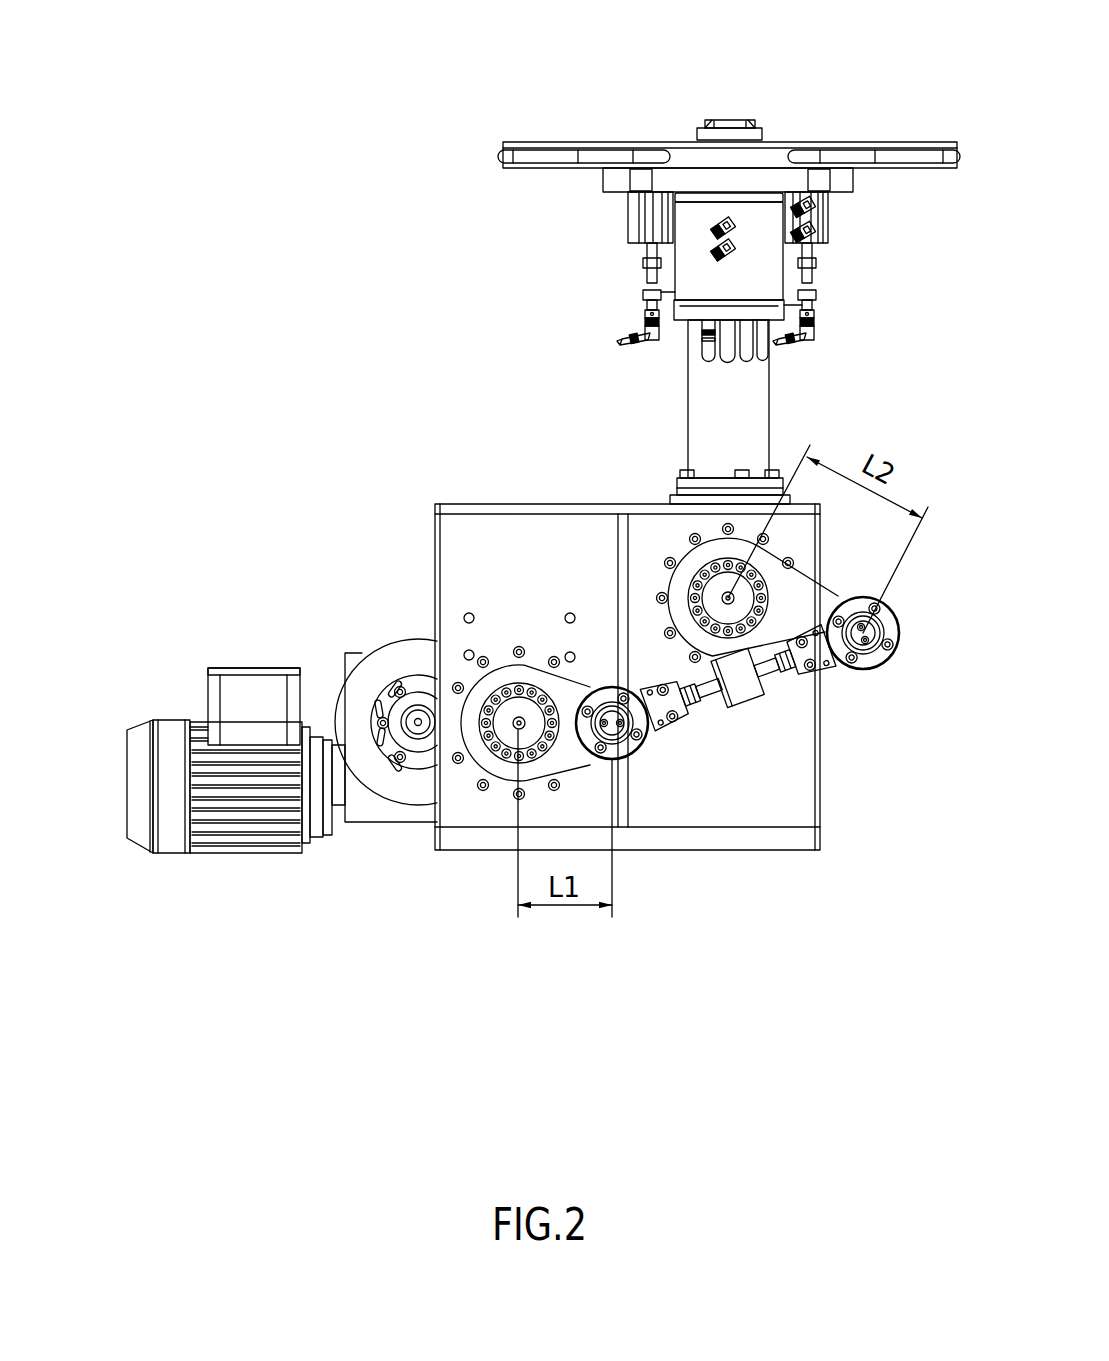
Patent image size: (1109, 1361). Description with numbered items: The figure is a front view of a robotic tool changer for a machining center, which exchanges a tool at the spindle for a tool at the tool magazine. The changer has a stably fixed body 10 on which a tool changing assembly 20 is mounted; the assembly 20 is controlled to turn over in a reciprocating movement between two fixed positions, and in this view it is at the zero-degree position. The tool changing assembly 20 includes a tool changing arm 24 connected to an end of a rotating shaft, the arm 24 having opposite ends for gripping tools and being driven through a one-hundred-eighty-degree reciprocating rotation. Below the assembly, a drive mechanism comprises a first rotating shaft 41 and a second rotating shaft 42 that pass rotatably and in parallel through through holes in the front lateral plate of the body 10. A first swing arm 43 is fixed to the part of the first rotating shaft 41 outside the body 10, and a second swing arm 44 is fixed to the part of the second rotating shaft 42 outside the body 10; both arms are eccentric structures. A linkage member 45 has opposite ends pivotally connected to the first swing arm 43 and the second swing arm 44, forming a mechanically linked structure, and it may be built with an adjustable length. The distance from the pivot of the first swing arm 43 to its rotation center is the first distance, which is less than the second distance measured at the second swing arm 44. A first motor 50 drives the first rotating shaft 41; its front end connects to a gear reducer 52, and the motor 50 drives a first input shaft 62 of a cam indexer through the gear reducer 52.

The body 10 is at (452, 492).
The tool changing assembly 20 is at (709, 257).
The tool changing arm 24 is at (852, 140).
The first rotating shaft 41 is at (502, 720).
The second rotating shaft 42 is at (713, 582).
The first swing arm 43 is at (530, 675).
The second swing arm 44 is at (722, 550).
The linkage member 45 is at (765, 699).
The first motor 50 is at (146, 710).
The gear reducer 52 is at (347, 658).
The first input shaft 62 is at (418, 724).